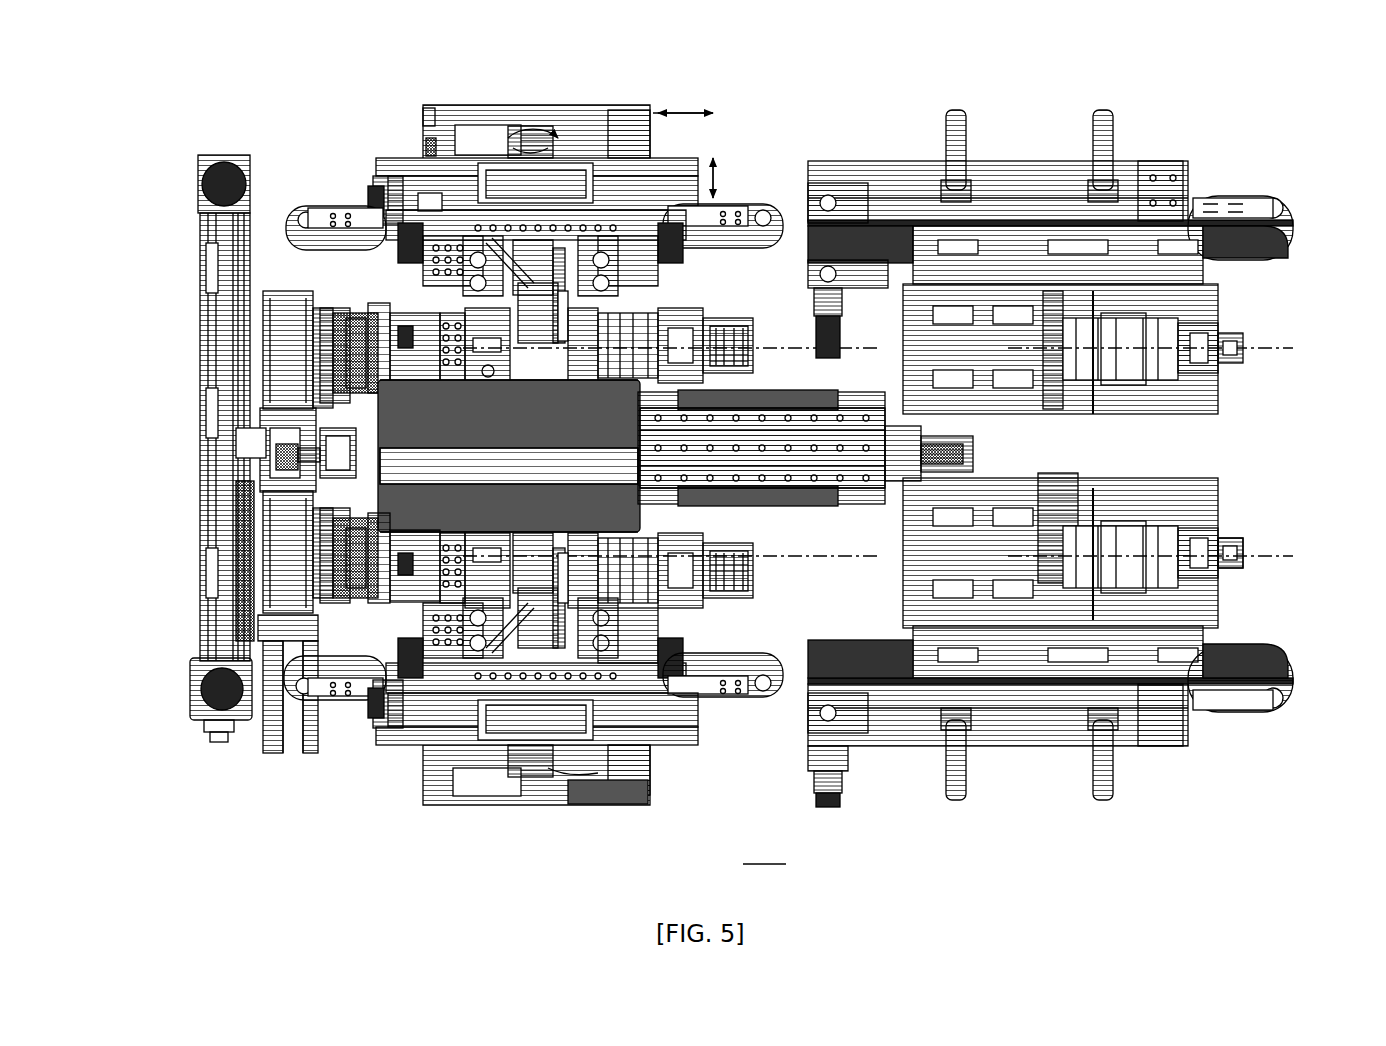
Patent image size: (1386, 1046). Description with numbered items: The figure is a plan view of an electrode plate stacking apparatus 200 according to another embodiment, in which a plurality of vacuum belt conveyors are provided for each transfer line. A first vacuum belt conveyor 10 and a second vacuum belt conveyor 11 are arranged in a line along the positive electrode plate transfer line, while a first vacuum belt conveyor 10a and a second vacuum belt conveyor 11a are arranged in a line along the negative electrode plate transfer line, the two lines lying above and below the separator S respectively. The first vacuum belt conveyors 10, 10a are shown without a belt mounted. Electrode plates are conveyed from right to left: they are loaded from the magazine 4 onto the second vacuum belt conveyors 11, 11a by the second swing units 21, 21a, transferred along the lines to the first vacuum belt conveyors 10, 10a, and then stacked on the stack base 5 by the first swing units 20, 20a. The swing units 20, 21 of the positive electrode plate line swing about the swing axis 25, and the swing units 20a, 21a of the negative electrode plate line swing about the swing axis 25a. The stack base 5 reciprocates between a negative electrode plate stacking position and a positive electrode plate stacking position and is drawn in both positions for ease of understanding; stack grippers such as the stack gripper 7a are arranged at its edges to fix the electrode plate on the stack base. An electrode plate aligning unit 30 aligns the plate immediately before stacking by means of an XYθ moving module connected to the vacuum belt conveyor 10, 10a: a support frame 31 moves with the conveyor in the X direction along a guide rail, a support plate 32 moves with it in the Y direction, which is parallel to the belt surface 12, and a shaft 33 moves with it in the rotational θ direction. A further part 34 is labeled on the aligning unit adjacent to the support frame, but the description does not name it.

The electrode plate stacking apparatus 200 is at (766, 851).
The separator S is at (420, 415).
The stack base 5 is at (283, 348).
The stack gripper 7a is at (375, 305).
The first vacuum belt conveyor 10 is at (543, 354).
The first vacuum belt conveyor 10a is at (705, 708).
The second vacuum belt conveyor 11 is at (1070, 234).
The second vacuum belt conveyor 11a is at (1250, 716).
The belt surface 12 is at (1225, 242).
The first swing unit 20 is at (568, 290).
The first swing unit 20a is at (568, 592).
The second swing unit 21 is at (1125, 386).
The second swing unit 21a is at (1115, 520).
The swing axis 25 is at (1275, 356).
The swing axis 25a is at (1270, 540).
The magazine 4 is at (1101, 368).
The electrode plate aligning unit 30 is at (520, 106).
The support frame 31 is at (635, 104).
The support plate 32 is at (690, 150).
The shaft 33 is at (500, 128).
The mounting bracket 34 is at (385, 200).